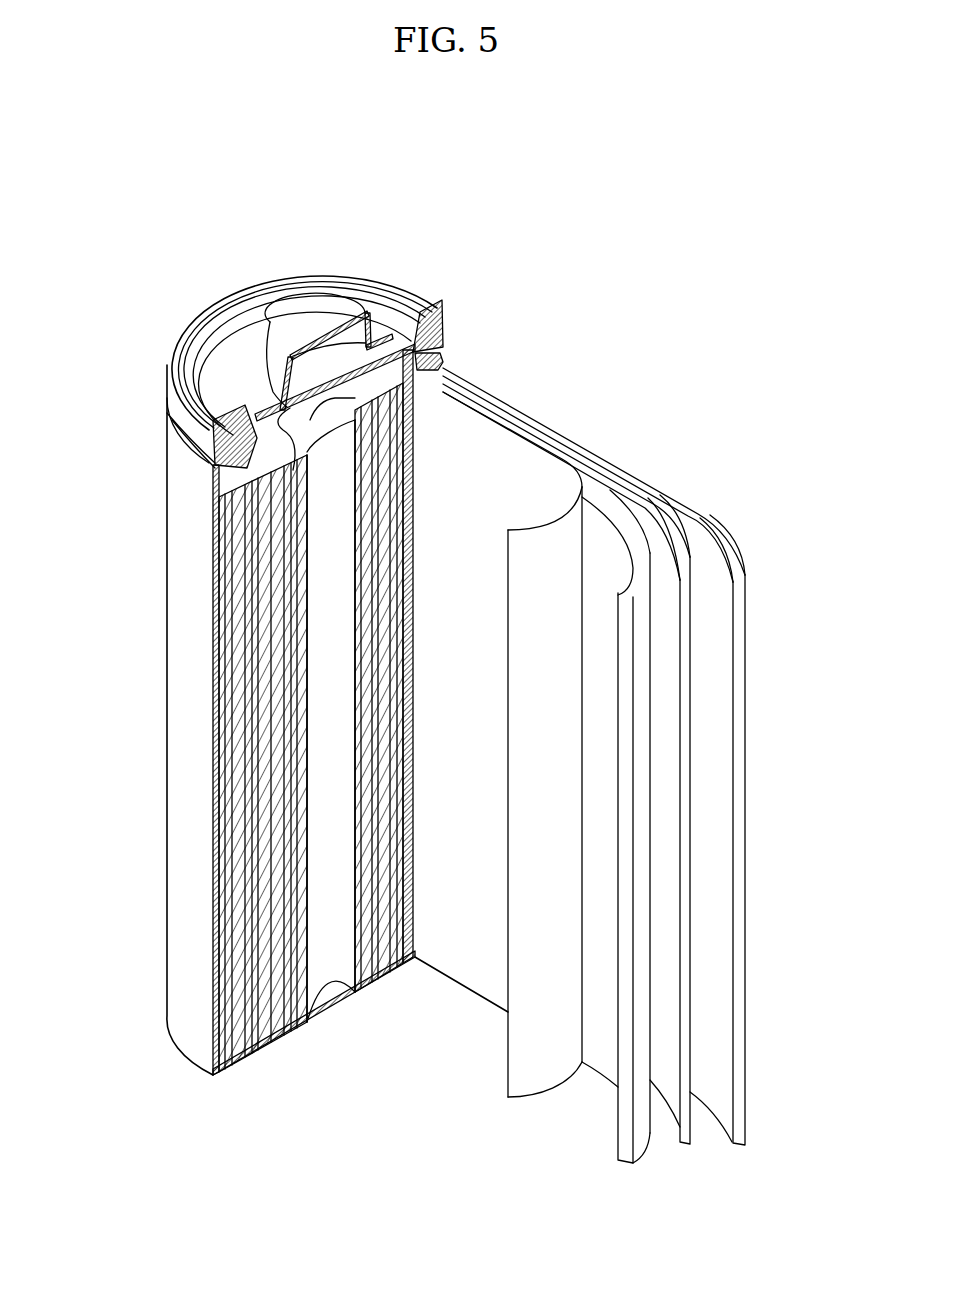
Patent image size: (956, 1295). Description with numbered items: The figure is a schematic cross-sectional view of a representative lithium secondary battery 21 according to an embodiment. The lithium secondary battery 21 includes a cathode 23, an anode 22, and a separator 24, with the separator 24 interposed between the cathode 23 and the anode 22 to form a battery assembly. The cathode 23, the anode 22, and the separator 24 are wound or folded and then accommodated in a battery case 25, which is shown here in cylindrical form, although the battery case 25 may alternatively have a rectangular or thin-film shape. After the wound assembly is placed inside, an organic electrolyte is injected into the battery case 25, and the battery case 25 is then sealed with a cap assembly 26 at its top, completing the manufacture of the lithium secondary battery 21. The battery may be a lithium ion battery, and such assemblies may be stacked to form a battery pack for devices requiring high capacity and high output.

The lithium secondary battery 21 is at (636, 297).
The anode 22 is at (728, 555).
The cathode 23 is at (608, 508).
The separator 24 is at (543, 537).
The battery case 25 is at (178, 723).
The cap assembly 26 is at (300, 318).